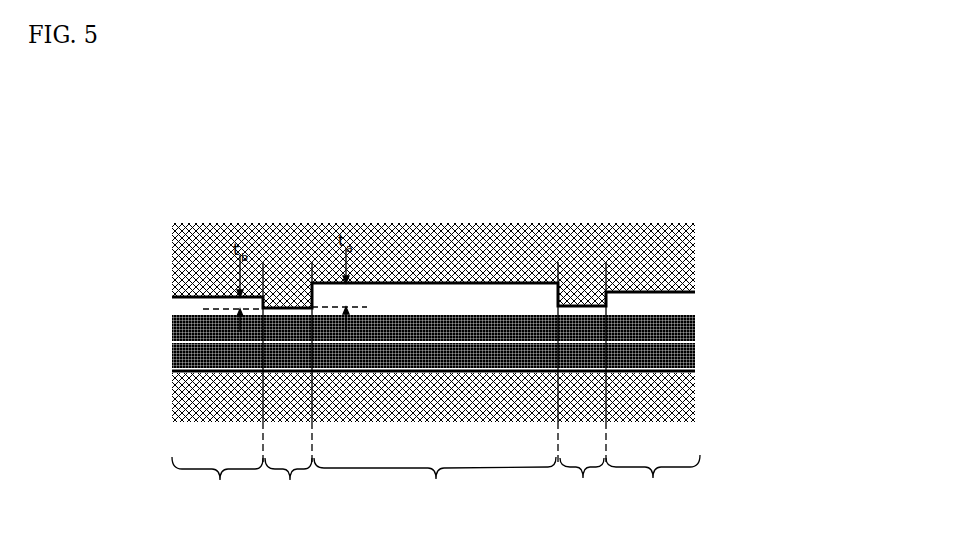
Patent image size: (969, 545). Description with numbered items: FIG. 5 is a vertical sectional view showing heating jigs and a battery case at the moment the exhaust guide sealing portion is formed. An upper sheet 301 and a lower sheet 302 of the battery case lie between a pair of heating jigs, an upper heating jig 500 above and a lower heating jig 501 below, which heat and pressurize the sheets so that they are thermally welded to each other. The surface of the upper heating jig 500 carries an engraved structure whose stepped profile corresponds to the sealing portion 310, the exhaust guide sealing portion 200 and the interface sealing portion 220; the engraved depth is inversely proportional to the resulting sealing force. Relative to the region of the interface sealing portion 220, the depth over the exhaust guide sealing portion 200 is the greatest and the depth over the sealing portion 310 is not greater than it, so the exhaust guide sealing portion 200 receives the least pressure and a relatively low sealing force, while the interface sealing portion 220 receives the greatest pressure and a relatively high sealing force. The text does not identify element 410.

The upper heating jig 500 is at (460, 237).
The lower heating jig 501 is at (692, 392).
The upper sheet 301 is at (688, 313).
The lower sheet 302 is at (692, 347).
The spacer layer 410 is at (185, 305).
The exhaust guide sealing portion 200 is at (435, 484).
The interface sealing portion 220 is at (436, 485).
The sealing portion 310 is at (436, 484).